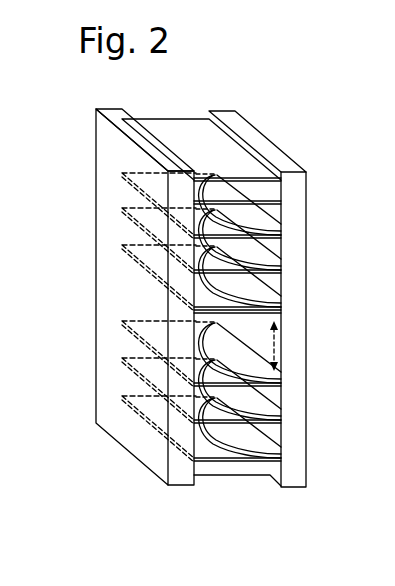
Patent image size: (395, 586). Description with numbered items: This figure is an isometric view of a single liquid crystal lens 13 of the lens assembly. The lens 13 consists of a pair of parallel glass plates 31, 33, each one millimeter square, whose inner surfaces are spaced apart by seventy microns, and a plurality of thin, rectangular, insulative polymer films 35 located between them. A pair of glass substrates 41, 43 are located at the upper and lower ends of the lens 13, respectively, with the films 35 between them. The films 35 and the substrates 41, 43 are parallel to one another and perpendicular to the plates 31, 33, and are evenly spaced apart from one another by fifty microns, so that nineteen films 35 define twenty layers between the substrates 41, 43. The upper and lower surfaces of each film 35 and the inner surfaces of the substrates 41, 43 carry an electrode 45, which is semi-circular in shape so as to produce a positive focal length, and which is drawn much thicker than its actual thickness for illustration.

The lens 13 is at (313, 134).
The glass plate 31 is at (182, 485).
The glass plate 33 is at (295, 487).
The glass substrate 41 is at (167, 120).
The glass substrate 43 is at (245, 478).
The electrode 45 is at (214, 448).
The polymer film 35 is at (146, 288).